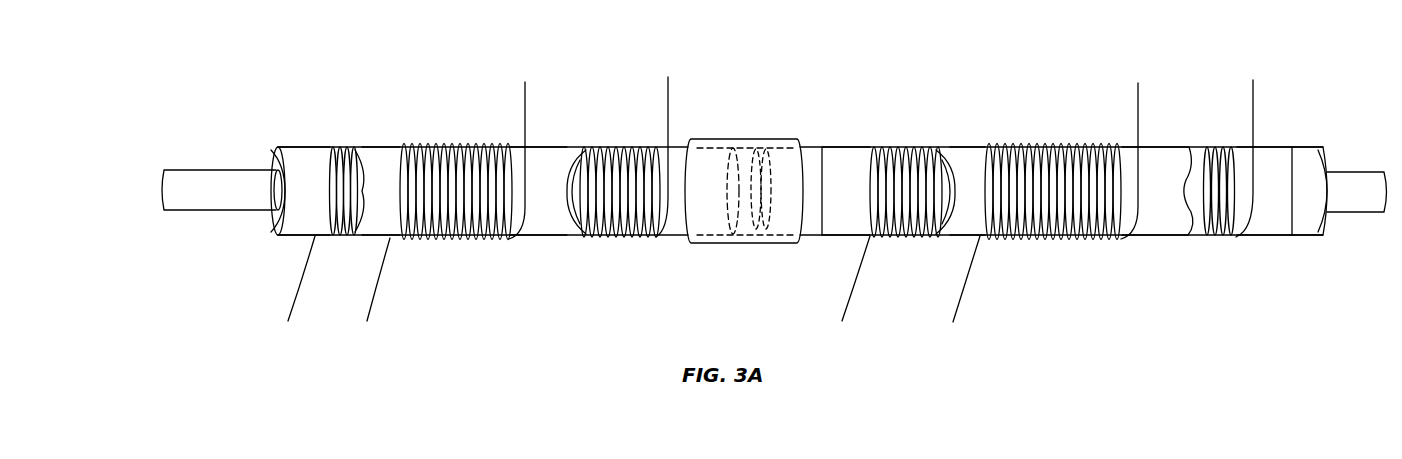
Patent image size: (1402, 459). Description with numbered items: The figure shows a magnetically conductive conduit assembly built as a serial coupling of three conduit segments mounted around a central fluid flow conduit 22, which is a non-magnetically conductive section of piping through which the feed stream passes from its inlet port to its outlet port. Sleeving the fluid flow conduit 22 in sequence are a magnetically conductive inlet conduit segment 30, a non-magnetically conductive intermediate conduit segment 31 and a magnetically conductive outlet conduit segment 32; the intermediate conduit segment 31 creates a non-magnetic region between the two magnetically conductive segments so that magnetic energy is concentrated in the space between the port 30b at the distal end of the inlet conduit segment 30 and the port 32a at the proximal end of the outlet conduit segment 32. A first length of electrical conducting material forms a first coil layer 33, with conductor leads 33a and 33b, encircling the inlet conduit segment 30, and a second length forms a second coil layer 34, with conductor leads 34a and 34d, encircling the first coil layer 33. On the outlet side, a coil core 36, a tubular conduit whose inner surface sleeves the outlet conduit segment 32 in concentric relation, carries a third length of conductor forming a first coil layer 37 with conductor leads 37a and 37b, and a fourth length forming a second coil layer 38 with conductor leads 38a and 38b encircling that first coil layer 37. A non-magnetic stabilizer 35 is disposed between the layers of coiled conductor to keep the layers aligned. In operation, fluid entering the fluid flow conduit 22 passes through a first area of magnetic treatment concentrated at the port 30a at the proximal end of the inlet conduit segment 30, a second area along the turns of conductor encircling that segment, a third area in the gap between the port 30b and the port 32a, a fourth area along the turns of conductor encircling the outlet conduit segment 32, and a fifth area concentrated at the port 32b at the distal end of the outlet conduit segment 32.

The fluid flow conduit 22 is at (208, 211).
The magnetically conductive inlet conduit segment 30 is at (315, 199).
The port at proximal end of inlet conduit segment 30a is at (273, 150).
The port at distal end of inlet conduit segment 30b is at (735, 198).
The non-magnetically conductive intermediate conduit segment 31 is at (748, 150).
The magnetically conductive outlet conduit segment 32 is at (1325, 199).
The port at proximal end of outlet conduit segment 32a is at (765, 221).
The port at distal end of outlet conduit segment 32b is at (1332, 157).
The first coil layer 33 is at (612, 150).
The conductor lead 33a is at (292, 312).
The conductor lead 33b is at (670, 90).
The second coil layer 34 is at (452, 147).
The conductor lead 34a is at (376, 296).
The second lead of second coil 34d is at (528, 89).
The non-magnetic stabilizer 35 is at (397, 199).
The coil core 36 is at (865, 199).
The first coil layer 37 is at (903, 150).
The conductor lead 37a is at (853, 303).
The conductor lead 37b is at (1257, 93).
The second coil layer 38 is at (1062, 147).
The conductor lead 38a is at (967, 297).
The conductor lead 38b is at (1142, 93).